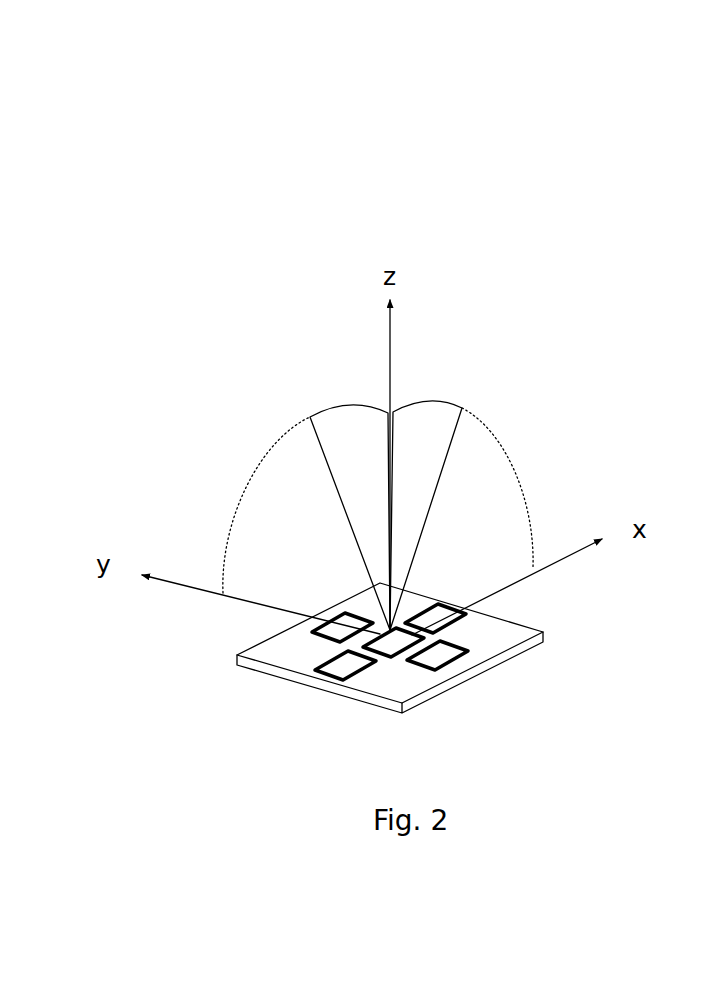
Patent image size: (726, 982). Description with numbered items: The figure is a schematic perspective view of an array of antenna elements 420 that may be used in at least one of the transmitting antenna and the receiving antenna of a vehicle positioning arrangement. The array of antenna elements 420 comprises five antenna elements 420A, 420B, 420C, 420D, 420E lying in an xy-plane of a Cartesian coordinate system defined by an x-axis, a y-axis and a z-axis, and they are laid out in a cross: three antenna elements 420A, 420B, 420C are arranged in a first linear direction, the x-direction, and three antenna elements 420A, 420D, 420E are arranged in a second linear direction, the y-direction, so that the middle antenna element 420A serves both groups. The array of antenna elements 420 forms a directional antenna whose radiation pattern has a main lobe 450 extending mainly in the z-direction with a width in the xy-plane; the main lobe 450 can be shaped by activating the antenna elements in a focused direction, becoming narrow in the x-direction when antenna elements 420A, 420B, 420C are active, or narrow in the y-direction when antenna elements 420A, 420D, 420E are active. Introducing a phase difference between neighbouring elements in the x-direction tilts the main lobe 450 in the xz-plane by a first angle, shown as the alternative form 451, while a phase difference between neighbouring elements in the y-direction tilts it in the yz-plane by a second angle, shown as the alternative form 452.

The array of antenna elements 420 is at (254, 152).
The middle antenna element 420A is at (397, 657).
The antenna element 420B is at (325, 672).
The antenna element 420C is at (455, 620).
The antenna element 420D is at (462, 657).
The antenna element 420E is at (312, 632).
The main lobe 450 is at (238, 392).
The alternative form of the main lobe 451 is at (415, 423).
The alternative form of the main lobe 452 is at (357, 427).